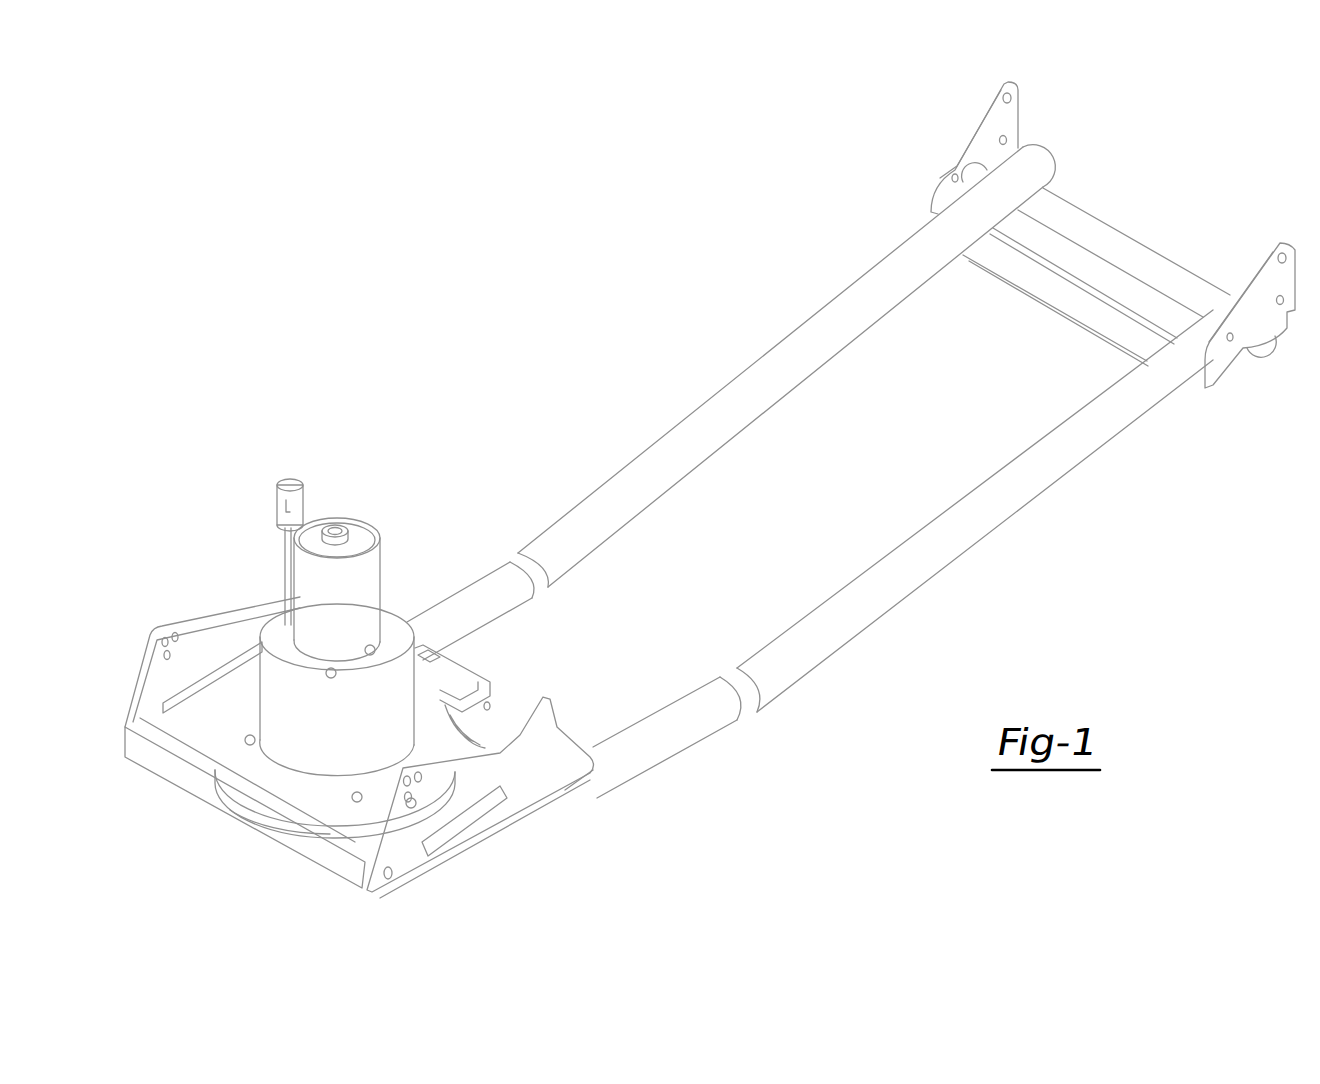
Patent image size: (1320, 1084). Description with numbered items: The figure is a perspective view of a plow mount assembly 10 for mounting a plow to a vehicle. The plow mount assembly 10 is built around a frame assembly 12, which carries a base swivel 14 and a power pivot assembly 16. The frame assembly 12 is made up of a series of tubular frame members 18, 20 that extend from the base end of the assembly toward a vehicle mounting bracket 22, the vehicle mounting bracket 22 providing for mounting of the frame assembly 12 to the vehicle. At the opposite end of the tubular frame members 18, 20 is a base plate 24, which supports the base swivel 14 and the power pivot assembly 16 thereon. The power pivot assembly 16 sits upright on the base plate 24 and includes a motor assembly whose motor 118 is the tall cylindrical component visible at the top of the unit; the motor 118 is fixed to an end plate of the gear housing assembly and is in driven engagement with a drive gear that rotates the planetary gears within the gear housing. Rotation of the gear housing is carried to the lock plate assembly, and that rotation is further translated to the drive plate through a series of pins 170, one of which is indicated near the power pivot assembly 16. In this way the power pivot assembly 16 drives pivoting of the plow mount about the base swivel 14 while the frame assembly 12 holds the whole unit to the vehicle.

The plow mount assembly 10 is at (707, 500).
The frame assembly 12 is at (851, 440).
The base swivel 14 is at (359, 757).
The power pivot assembly 16 is at (335, 649).
The tubular frame member 18 is at (731, 402).
The tubular frame member 20 is at (903, 554).
The vehicle mounting bracket 22 is at (1096, 270).
The base plate 24 is at (480, 790).
The motor 118 is at (260, 552).
The pins 170 is at (461, 650).